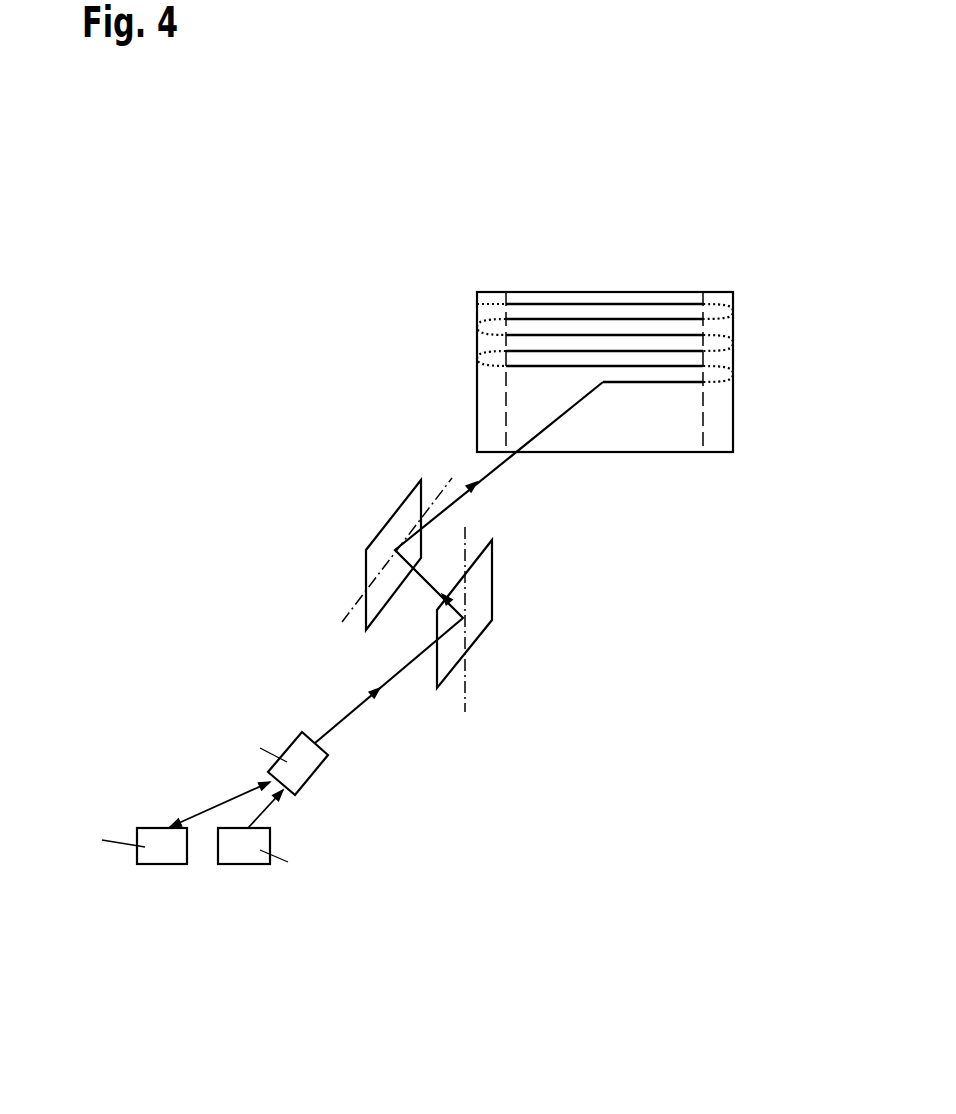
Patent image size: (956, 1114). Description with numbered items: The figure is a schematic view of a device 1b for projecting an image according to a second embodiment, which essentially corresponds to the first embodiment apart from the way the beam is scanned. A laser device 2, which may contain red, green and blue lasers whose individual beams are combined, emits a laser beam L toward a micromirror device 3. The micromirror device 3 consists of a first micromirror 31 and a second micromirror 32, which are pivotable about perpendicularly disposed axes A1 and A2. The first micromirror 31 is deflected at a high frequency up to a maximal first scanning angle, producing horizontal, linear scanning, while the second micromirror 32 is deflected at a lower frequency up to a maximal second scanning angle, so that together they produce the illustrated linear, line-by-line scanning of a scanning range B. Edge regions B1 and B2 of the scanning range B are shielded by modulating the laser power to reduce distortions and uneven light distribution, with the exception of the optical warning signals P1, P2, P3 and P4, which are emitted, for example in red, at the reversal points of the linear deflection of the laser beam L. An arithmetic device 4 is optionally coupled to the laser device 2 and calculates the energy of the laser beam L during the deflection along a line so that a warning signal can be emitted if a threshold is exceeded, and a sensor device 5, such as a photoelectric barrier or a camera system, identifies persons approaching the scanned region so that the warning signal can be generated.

The device for projecting an image 1b is at (340, 222).
The laser device 2 is at (315, 777).
The micromirror device 3 is at (340, 473).
The first micromirror 31 is at (493, 563).
The second micromirror 32 is at (365, 560).
The arithmetic device 4 is at (162, 865).
The sensor device 5 is at (245, 865).
The axis A1 is at (465, 712).
The axis A2 is at (350, 607).
The scanning range B is at (635, 433).
The edge region B1 is at (715, 427).
The edge region B2 is at (495, 427).
The laser beam L is at (353, 713).
The optical warning signal P1 is at (733, 312).
The optical warning signal P2 is at (733, 343).
The optical warning signal P3 is at (733, 373).
The optical warning signal P4 is at (477, 304).